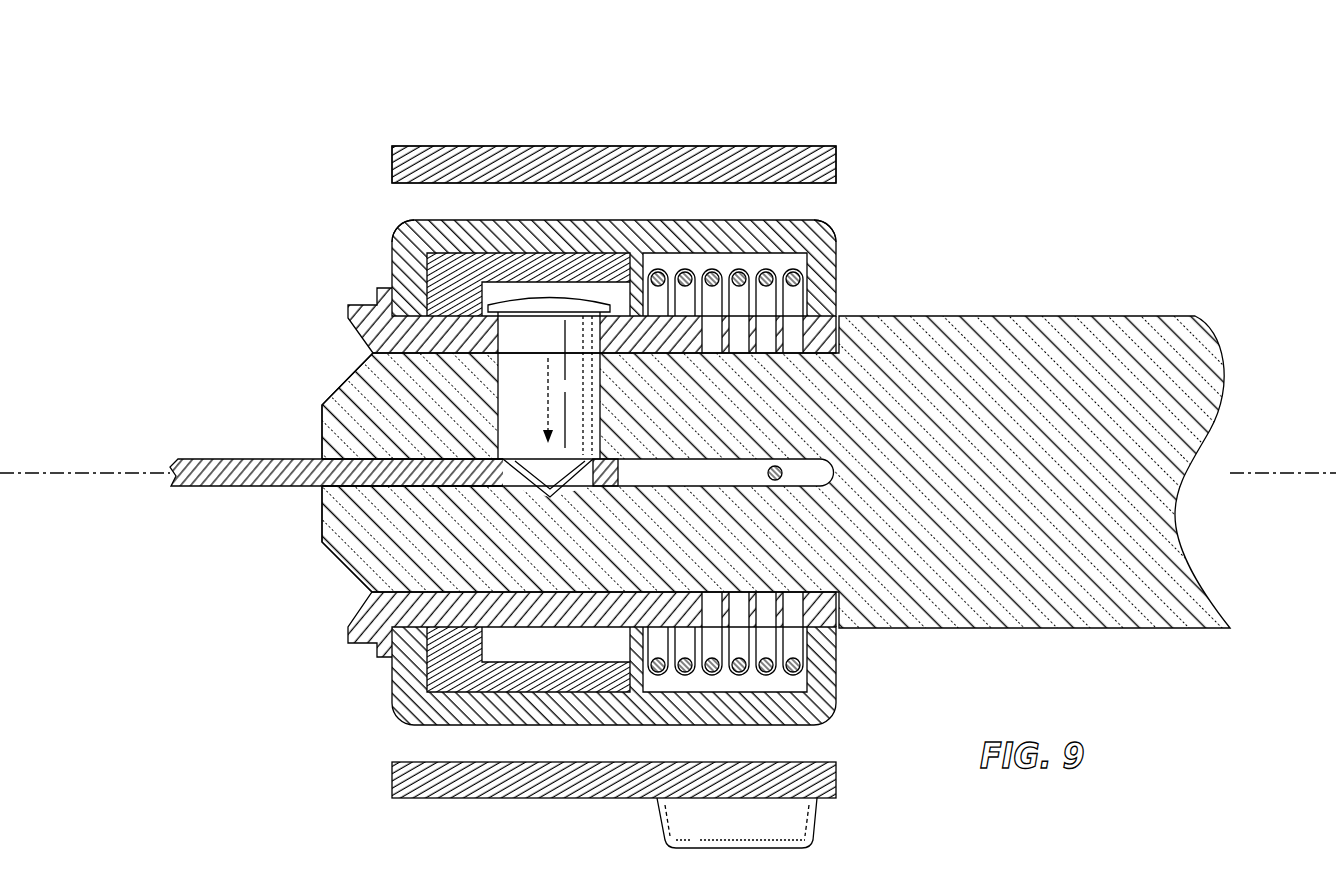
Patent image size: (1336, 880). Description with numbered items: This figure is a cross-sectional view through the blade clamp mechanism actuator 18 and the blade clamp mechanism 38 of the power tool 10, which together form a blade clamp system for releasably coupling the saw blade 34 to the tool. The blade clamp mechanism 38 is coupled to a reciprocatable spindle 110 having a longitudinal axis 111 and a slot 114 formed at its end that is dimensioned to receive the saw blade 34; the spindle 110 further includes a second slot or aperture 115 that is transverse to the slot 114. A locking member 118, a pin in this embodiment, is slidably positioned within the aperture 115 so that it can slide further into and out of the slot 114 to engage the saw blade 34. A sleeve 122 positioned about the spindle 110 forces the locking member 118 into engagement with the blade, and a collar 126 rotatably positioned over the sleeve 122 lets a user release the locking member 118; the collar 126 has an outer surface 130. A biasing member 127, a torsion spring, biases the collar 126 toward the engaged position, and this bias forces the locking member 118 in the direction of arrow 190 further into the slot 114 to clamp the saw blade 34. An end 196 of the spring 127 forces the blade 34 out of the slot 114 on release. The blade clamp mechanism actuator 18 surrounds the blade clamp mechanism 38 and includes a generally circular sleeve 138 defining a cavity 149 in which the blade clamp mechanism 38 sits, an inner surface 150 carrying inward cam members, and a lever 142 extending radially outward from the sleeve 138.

The power tool 10 is at (974, 163).
The blade clamp mechanism actuator 18 is at (437, 145).
The saw blade 34 is at (233, 458).
The blade clamp mechanism 38 is at (838, 268).
The spindle 110 is at (932, 316).
The longitudinal axis 111 is at (1280, 470).
The slot 114 is at (345, 473).
The aperture 115 is at (512, 425).
The locking member 118 is at (500, 296).
The sleeve 122 is at (347, 315).
The collar 126 is at (406, 197).
The biasing member 127 is at (810, 724).
The outer surface 130 is at (546, 220).
The sleeve 138 is at (628, 146).
The lever 142 is at (815, 833).
The cavity 149 is at (400, 236).
The inner surface 150 is at (812, 200).
The arrow 190 is at (529, 383).
The end of the spring 196 is at (782, 476).